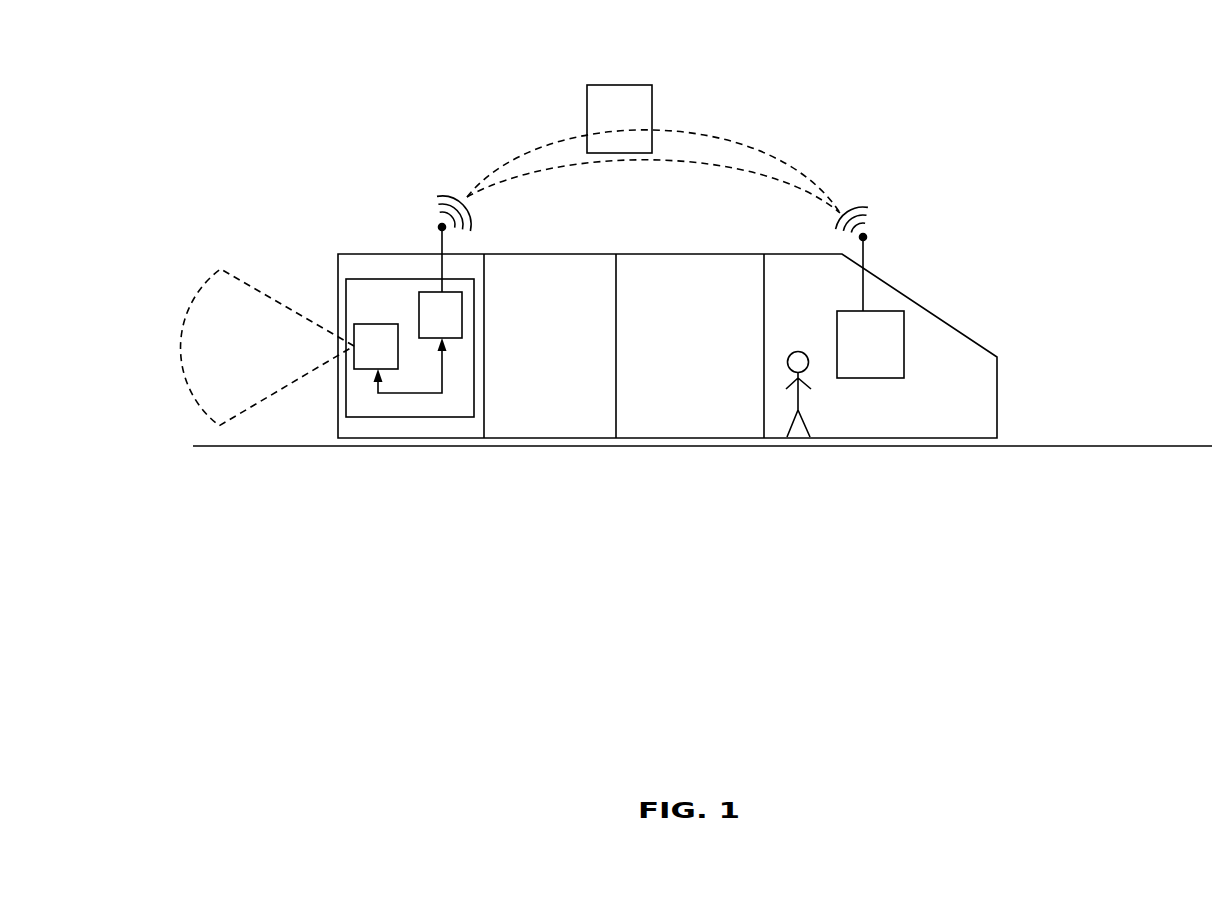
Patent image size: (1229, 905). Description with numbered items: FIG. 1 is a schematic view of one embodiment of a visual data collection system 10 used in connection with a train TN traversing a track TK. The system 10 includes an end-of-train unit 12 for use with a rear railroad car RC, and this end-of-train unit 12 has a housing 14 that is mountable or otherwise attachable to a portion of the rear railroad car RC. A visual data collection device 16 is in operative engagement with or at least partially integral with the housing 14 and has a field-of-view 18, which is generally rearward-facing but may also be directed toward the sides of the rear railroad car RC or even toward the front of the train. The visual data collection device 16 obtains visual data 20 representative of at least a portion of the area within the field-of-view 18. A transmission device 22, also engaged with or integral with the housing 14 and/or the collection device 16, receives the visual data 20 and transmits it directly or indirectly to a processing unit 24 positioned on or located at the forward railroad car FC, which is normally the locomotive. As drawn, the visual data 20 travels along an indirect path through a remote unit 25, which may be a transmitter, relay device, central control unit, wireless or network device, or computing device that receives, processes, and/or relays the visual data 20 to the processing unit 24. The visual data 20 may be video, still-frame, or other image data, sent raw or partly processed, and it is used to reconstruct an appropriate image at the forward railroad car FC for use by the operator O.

The visual data collection system 10 is at (867, 152).
The end-of-train unit 12 is at (375, 257).
The housing 14 is at (462, 322).
The visual data collection device 16 is at (366, 369).
The field-of-view 18 is at (268, 396).
The visual data 20 is at (710, 167).
The transmission device 22 is at (457, 338).
The processing unit 24 is at (904, 347).
The remote unit 25 is at (620, 84).
The rear railroad car RC is at (413, 212).
The forward railroad car FC is at (957, 228).
The train TN is at (1060, 328).
The track TK is at (1080, 447).
The operator O is at (798, 397).